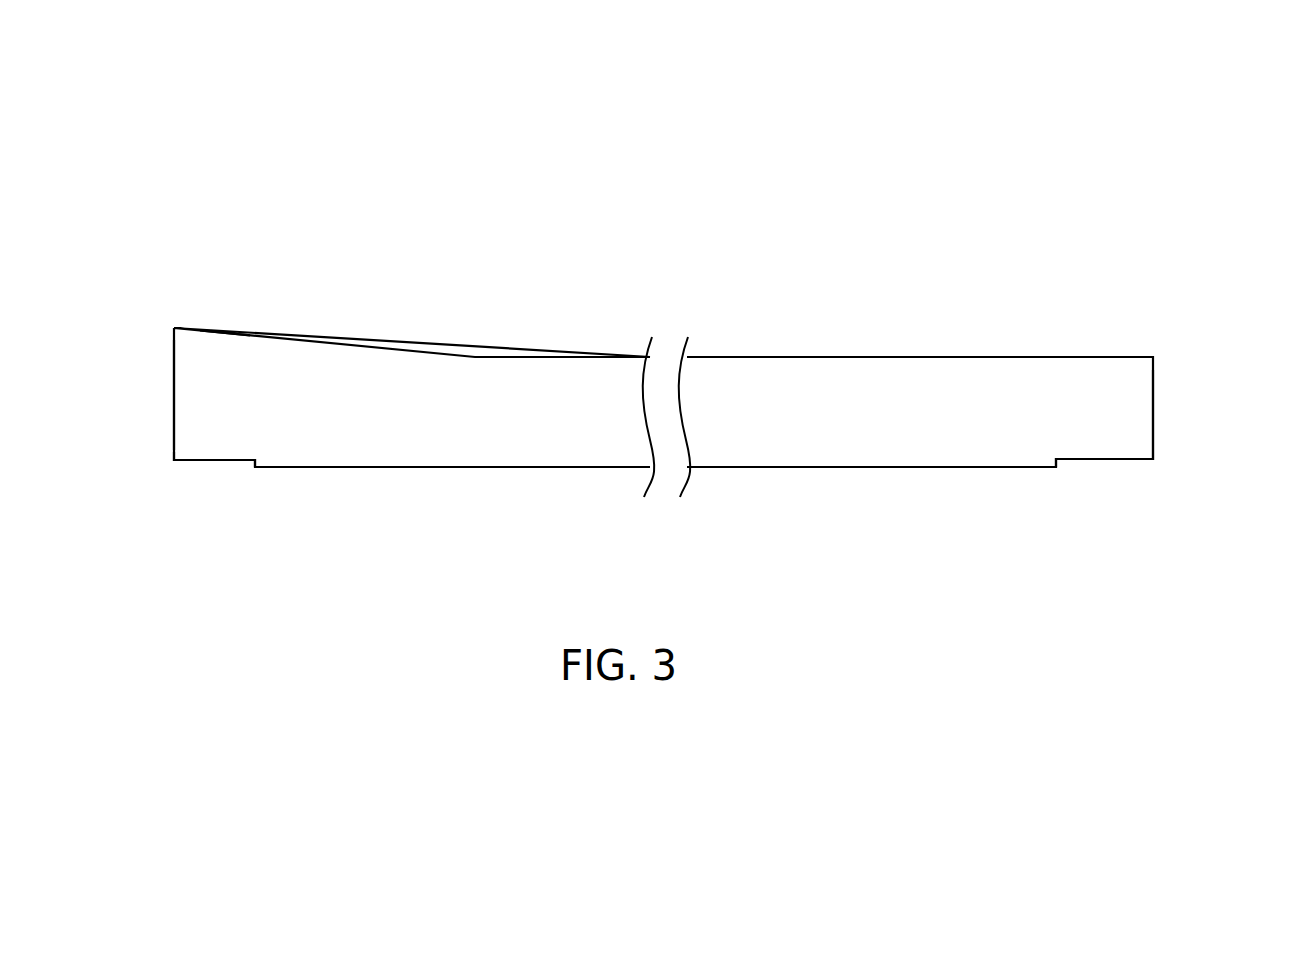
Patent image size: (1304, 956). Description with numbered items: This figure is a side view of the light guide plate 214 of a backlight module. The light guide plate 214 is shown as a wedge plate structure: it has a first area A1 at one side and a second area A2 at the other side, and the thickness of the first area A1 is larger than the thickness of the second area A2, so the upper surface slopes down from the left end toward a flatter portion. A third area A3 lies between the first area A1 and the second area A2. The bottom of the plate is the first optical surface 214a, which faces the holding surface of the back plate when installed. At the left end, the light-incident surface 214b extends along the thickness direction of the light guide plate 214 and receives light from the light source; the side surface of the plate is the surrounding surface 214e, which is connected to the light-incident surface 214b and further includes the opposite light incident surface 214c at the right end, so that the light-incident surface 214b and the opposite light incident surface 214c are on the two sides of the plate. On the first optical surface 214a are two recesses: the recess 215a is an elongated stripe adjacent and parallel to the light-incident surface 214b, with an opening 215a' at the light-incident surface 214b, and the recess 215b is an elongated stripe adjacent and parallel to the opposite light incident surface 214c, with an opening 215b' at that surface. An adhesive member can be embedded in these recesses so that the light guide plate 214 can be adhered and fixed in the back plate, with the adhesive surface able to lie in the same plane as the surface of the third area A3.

The light guide plate 214 is at (83, 251).
The first optical surface 214a is at (382, 470).
The light-incident surface 214b is at (174, 391).
The opposite light incident surface 214c is at (1153, 411).
The surrounding surface 214e is at (547, 442).
The recess 215a is at (215, 520).
The opening 215a' is at (126, 503).
The recess 215b is at (1104, 519).
The opening 215b' is at (1203, 491).
The first area A1 is at (226, 318).
The second area A2 is at (1104, 342).
The third area A3 is at (771, 342).